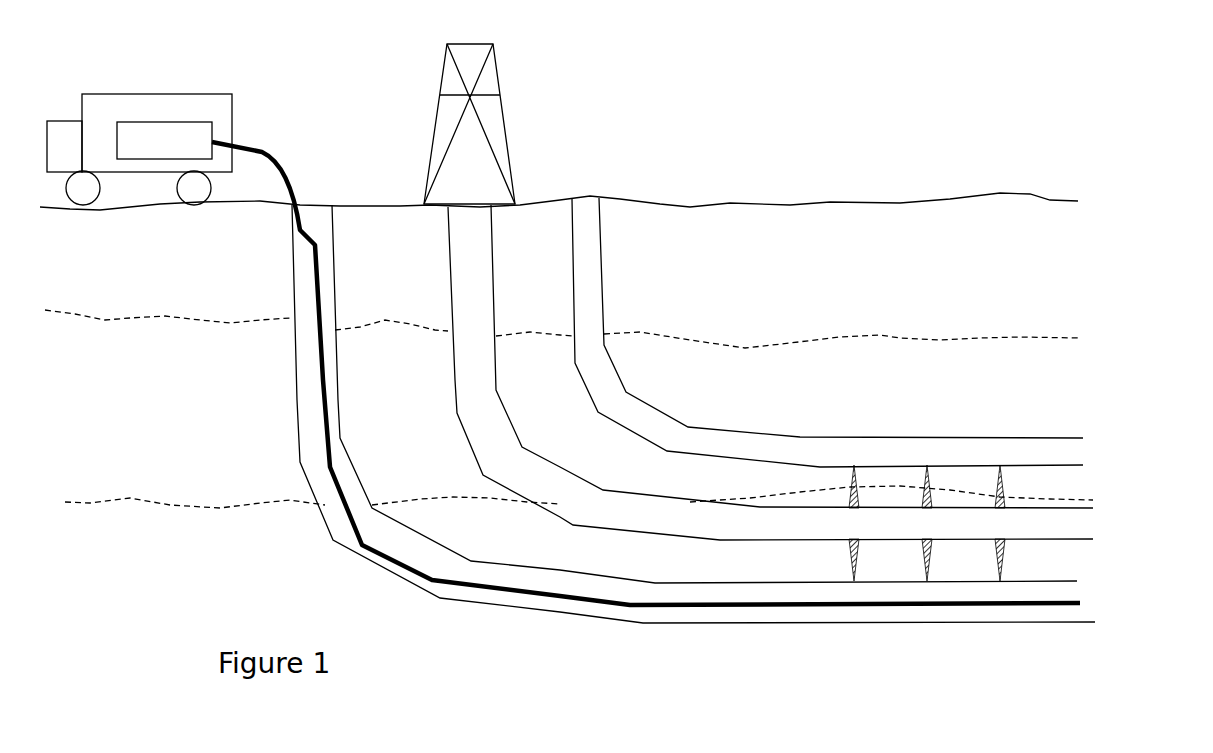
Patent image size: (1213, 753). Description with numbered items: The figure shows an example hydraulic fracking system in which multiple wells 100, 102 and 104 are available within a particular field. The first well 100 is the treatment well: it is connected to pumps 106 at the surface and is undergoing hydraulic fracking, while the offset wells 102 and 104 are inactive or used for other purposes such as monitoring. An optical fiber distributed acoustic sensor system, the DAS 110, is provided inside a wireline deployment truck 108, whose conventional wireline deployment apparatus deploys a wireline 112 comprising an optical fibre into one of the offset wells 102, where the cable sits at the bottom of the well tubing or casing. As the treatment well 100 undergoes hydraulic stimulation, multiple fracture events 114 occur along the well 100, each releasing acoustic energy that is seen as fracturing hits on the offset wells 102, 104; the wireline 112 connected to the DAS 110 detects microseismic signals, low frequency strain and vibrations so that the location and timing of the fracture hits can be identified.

The first well 100 is at (477, 449).
The offset well 102 is at (336, 293).
The offset well 104 is at (603, 310).
The pumps 106 is at (508, 122).
The wireline deployment truck 108 is at (137, 95).
The DAS system 110 is at (162, 120).
The wireline 112 is at (315, 388).
The fracture events 114 is at (1014, 558).